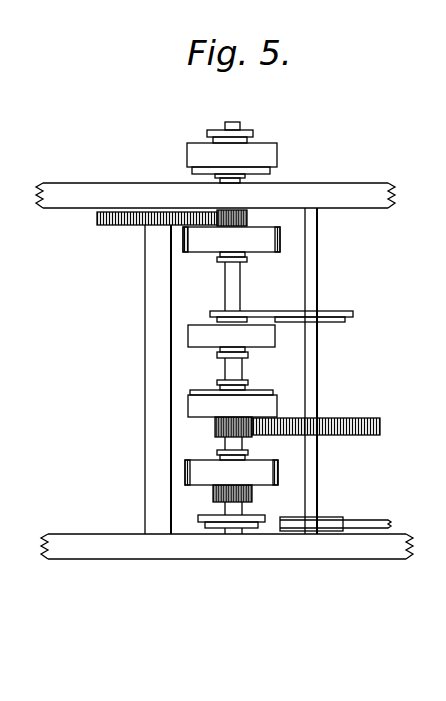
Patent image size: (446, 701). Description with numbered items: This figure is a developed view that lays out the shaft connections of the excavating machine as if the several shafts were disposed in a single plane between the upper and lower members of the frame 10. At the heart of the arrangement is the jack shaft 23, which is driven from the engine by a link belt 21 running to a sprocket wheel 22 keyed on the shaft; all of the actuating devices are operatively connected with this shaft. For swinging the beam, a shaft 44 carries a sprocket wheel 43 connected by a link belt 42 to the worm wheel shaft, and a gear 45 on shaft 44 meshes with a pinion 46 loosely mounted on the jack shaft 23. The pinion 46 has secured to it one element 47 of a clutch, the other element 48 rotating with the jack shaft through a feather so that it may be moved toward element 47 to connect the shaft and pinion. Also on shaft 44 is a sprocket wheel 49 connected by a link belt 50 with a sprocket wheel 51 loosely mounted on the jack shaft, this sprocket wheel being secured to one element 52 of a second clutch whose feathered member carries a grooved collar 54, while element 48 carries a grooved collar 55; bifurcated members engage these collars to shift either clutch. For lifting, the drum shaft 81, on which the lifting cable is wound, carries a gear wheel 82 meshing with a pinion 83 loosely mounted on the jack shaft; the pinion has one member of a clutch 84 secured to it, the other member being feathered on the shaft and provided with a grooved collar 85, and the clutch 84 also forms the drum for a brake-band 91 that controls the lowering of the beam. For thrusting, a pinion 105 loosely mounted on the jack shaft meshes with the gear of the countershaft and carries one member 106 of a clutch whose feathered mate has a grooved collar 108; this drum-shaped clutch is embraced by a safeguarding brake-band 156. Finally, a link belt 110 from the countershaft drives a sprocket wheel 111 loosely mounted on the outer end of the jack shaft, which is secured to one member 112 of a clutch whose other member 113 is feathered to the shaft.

The frame member 10 is at (348, 190).
The link belt 21 is at (213, 518).
The sprocket wheel 22 is at (235, 524).
The jack shaft 23 is at (213, 500).
The link belt 42 is at (363, 521).
The sprocket wheel 43 is at (320, 519).
The shaft 44 is at (318, 380).
The gear 45 is at (352, 434).
The pinion 46 is at (214, 430).
The clutch element 47 is at (277, 408).
The clutch element 48 is at (266, 392).
The sprocket wheel 49 is at (325, 314).
The link belt 50 is at (258, 312).
The sprocket wheel 51 is at (216, 313).
The clutch element 52 is at (196, 330).
The grooved collar 54 is at (218, 383).
The grooved collar 55 is at (218, 355).
The drum shaft 81 is at (147, 310).
The gear wheel 82 is at (108, 225).
The pinion 83 is at (248, 218).
The clutch 84 is at (262, 248).
The grooved collar 85 is at (218, 258).
The brake-band 91 is at (278, 238).
The pinion 105 is at (242, 492).
The clutch member 106 is at (258, 472).
The grooved collar 108 is at (248, 454).
The link belt 110 is at (212, 130).
The sprocket wheel 111 is at (244, 128).
The clutch member 112 is at (278, 151).
The clutch member 113 is at (272, 169).
The brake-band 156 is at (278, 484).